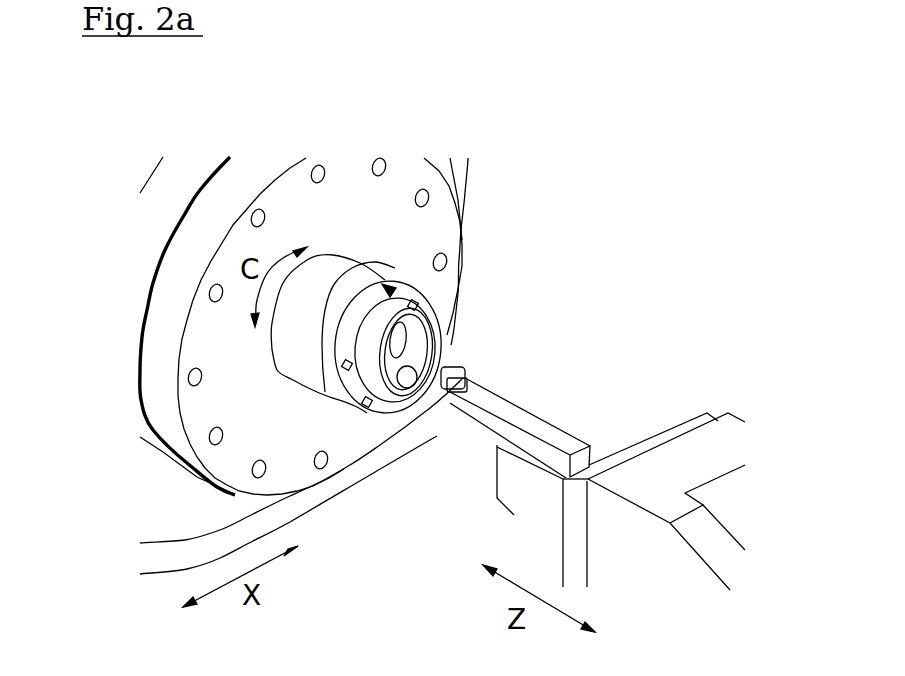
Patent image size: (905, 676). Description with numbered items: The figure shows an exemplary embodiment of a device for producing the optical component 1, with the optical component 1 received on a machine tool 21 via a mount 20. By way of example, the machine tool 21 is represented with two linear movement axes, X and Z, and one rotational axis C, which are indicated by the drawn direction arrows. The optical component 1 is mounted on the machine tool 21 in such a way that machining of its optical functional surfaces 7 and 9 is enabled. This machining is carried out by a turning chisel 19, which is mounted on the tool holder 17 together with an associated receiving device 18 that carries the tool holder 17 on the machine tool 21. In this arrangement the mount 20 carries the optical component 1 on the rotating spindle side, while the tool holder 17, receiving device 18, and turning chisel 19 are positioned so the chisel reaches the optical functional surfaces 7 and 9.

The optical component 1 is at (375, 372).
The optical functional surface 7 is at (420, 323).
The optical functional surface 9 is at (438, 352).
The tool holder 17 is at (530, 420).
The receiving device 18 is at (643, 463).
The turning chisel 19 is at (458, 293).
The mount 20 is at (322, 338).
The machine tool 21 is at (205, 226).